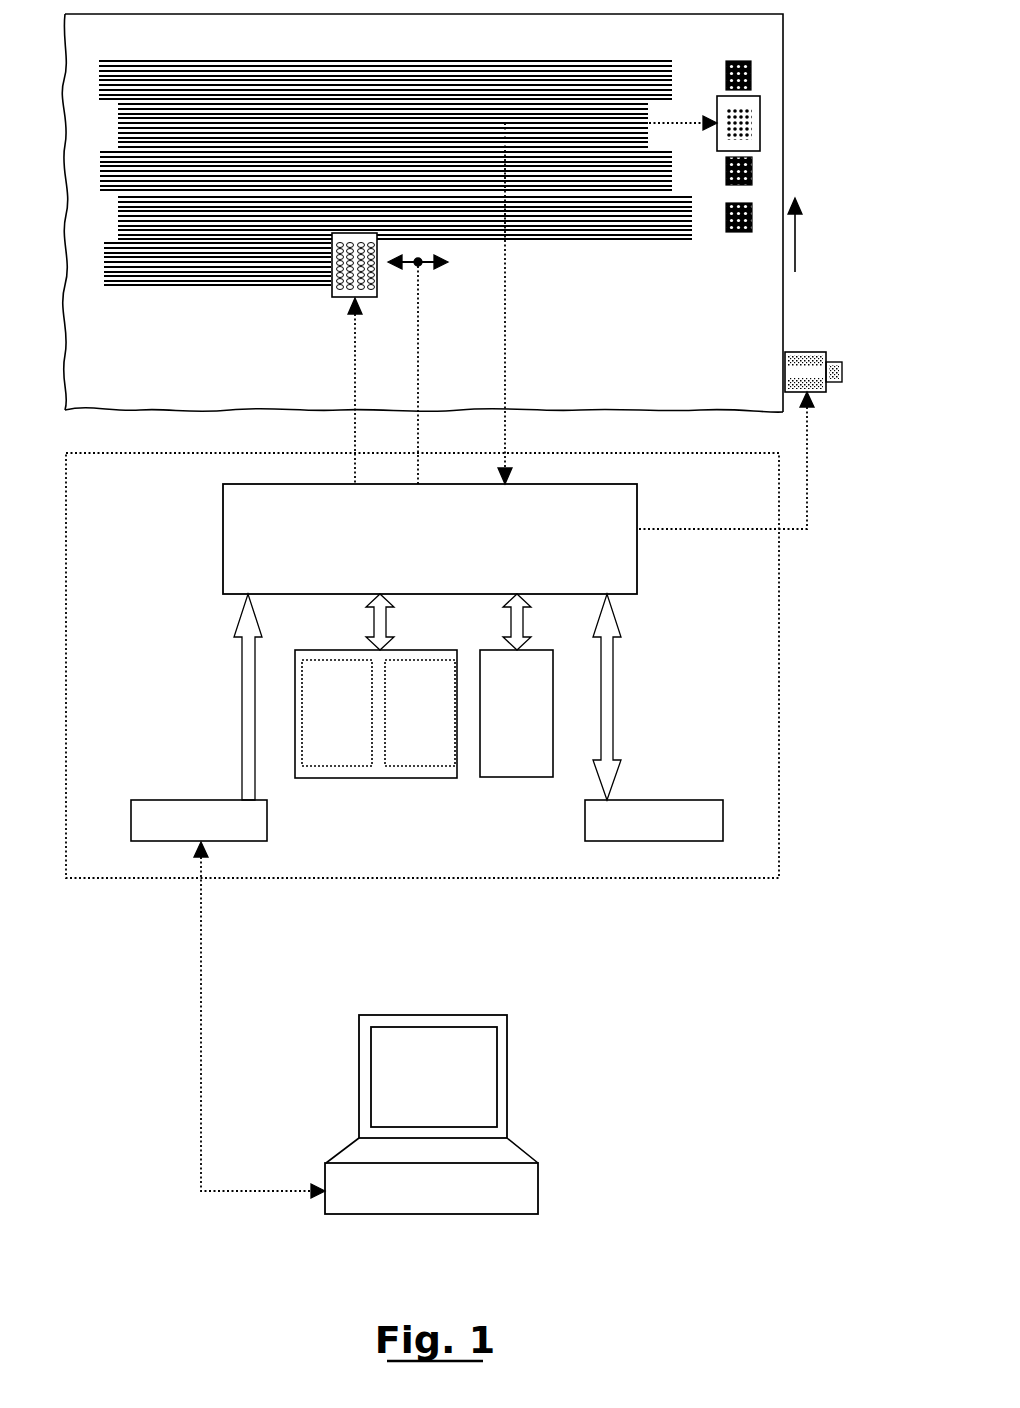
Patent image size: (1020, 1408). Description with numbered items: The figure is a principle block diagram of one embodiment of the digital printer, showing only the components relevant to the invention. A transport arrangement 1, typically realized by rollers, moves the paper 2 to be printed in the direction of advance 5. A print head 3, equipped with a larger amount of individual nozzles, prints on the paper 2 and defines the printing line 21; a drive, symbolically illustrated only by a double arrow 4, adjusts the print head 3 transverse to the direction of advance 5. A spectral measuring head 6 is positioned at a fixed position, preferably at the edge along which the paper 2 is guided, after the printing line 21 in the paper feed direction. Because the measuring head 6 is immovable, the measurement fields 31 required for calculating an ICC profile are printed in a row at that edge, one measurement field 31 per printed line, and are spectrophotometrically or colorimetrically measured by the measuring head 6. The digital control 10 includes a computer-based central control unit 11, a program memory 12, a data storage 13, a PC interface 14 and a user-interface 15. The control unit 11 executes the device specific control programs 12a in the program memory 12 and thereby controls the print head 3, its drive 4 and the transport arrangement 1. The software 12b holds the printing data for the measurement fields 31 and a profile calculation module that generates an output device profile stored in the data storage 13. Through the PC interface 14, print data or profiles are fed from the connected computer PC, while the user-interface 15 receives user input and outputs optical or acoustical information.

The transport arrangement 1 is at (810, 350).
The substrate to be printed (paper) 2 is at (770, 30).
The print head 3 is at (333, 297).
The drive 4 is at (421, 266).
The direction of advance 5 is at (797, 262).
The spectral measuring head 6 is at (750, 105).
The digital control 10 is at (745, 668).
The central control unit 11 is at (257, 531).
The program memory 12 is at (376, 735).
The control programs 12a is at (345, 735).
The software 12b is at (415, 735).
The data storage 13 is at (510, 757).
The PC interface 14 is at (158, 823).
The user-interface 15 is at (668, 822).
The printing line 21 is at (150, 270).
The measurement fields 31 is at (737, 240).
The computer PC is at (505, 1153).